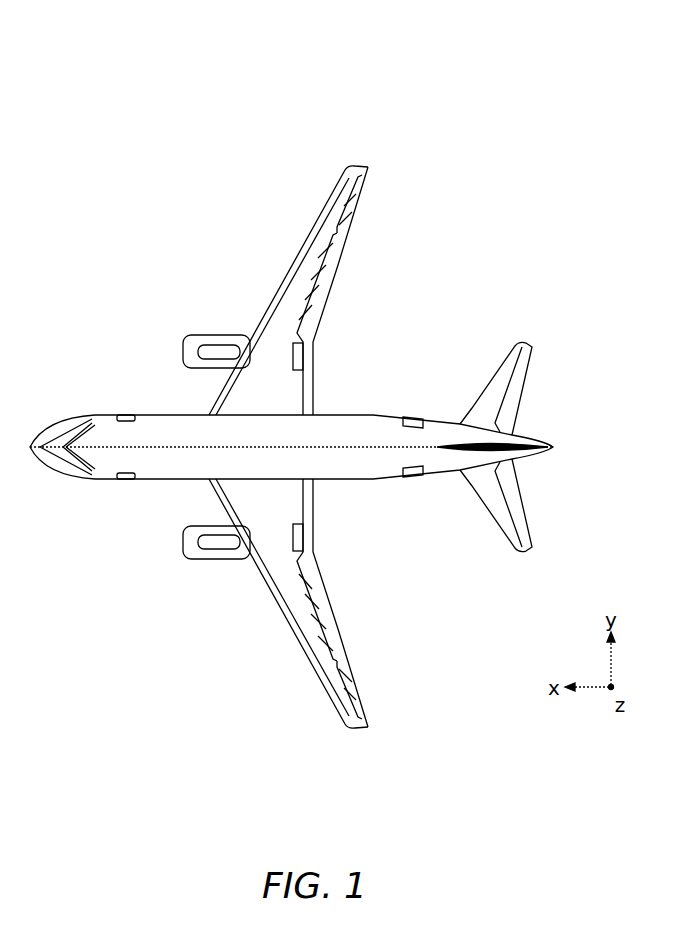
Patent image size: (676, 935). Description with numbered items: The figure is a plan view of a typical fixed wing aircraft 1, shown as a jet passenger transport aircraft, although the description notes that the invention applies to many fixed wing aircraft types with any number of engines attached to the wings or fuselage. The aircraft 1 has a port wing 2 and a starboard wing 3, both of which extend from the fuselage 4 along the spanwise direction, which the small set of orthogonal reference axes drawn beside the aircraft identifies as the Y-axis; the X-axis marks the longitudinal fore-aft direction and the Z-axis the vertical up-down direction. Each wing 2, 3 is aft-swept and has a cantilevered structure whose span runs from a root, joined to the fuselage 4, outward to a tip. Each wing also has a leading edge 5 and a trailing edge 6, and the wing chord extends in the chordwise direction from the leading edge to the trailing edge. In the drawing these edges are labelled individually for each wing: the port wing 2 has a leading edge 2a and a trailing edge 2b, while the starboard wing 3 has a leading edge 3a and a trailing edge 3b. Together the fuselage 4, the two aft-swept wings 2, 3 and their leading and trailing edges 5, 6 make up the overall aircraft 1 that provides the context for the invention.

The aircraft 1 is at (172, 117).
The port wing 2 is at (323, 655).
The leading edge of port wing 2a is at (282, 612).
The trailing edge of port wing 2b is at (325, 583).
The starboard wing 3 is at (326, 233).
The leading edge of starboard wing 3a is at (266, 320).
The trailing edge of starboard wing 3b is at (325, 310).
The fuselage 4 is at (115, 428).
The leading edge 5 is at (292, 262).
The trailing edge 6 is at (348, 234).